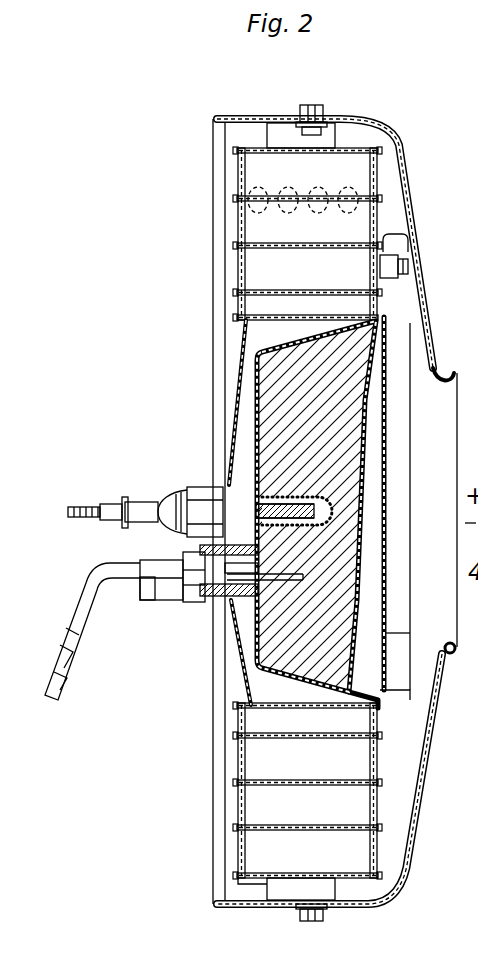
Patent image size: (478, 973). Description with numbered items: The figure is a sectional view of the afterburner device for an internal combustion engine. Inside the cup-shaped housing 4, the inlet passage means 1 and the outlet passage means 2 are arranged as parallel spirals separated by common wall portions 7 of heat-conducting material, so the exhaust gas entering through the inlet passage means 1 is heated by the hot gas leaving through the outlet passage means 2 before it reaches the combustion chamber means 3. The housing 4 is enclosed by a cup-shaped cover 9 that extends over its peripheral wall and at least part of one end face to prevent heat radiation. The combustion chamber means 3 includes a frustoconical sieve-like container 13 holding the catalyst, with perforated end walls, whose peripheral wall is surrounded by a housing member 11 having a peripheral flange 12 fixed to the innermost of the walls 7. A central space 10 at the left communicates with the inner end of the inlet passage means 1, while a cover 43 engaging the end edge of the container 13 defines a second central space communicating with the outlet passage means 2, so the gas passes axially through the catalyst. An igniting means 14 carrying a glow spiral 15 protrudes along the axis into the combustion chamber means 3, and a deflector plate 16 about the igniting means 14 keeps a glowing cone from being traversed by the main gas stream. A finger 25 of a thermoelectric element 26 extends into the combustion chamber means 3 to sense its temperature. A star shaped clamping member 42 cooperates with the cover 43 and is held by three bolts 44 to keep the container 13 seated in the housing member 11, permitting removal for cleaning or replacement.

The inlet passage means 1 is at (357, 218).
The outlet passage means 2 is at (362, 170).
The combustion chamber means 3 is at (254, 424).
The housing 4 is at (243, 852).
The common wall portions 7 is at (263, 247).
The cup-shaped cover 9 is at (398, 127).
The central space 10 is at (240, 370).
The housing member 11 is at (246, 697).
The peripheral flange 12 is at (363, 723).
The container 13 is at (254, 442).
The igniting means 14 is at (197, 512).
The glow spiral 15 is at (305, 507).
The deflector plate 16 is at (222, 550).
The finger 25 is at (228, 604).
The thermoelectric element 26 is at (177, 597).
The star shaped clamping member 42 is at (400, 355).
The cover 43 is at (385, 703).
The bolts 44 is at (408, 267).